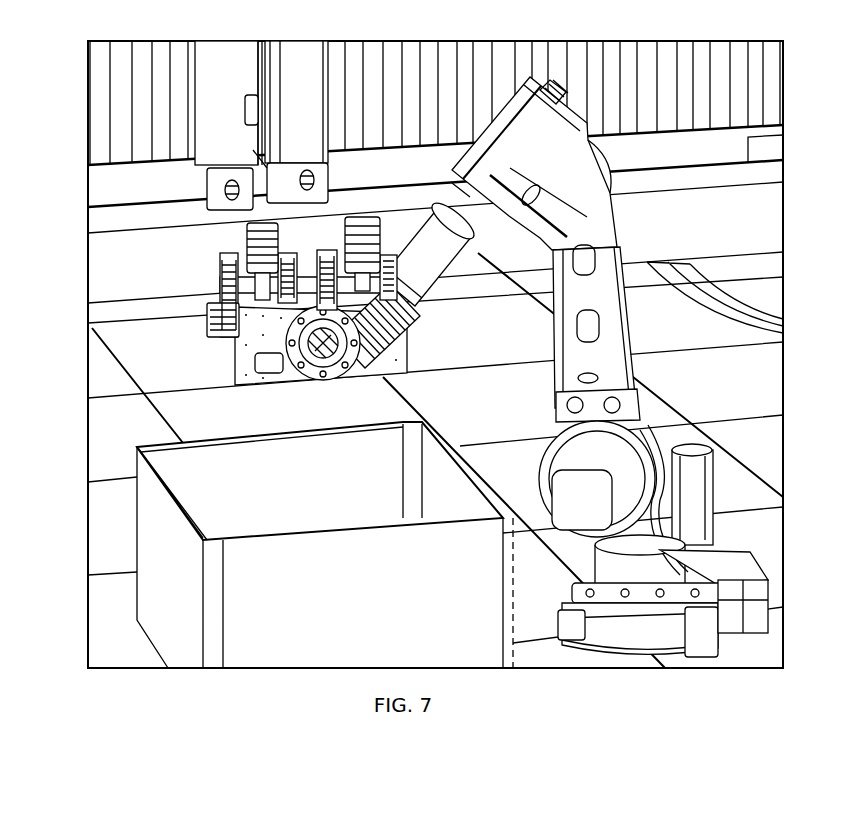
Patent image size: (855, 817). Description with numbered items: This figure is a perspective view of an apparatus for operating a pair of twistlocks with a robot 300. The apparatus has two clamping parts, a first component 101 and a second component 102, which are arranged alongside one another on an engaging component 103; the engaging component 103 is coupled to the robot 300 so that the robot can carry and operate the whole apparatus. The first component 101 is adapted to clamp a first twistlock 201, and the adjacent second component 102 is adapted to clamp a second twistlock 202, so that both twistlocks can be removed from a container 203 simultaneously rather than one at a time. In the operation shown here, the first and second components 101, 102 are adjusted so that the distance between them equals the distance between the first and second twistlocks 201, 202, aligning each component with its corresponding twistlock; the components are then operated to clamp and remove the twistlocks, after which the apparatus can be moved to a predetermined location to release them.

The first component 101 is at (222, 272).
The second component 102 is at (332, 254).
The engaging component 103 is at (238, 375).
The first twistlock 201 is at (245, 242).
The second twistlock 202 is at (366, 222).
The container 203 is at (102, 62).
The robot 300 is at (610, 292).